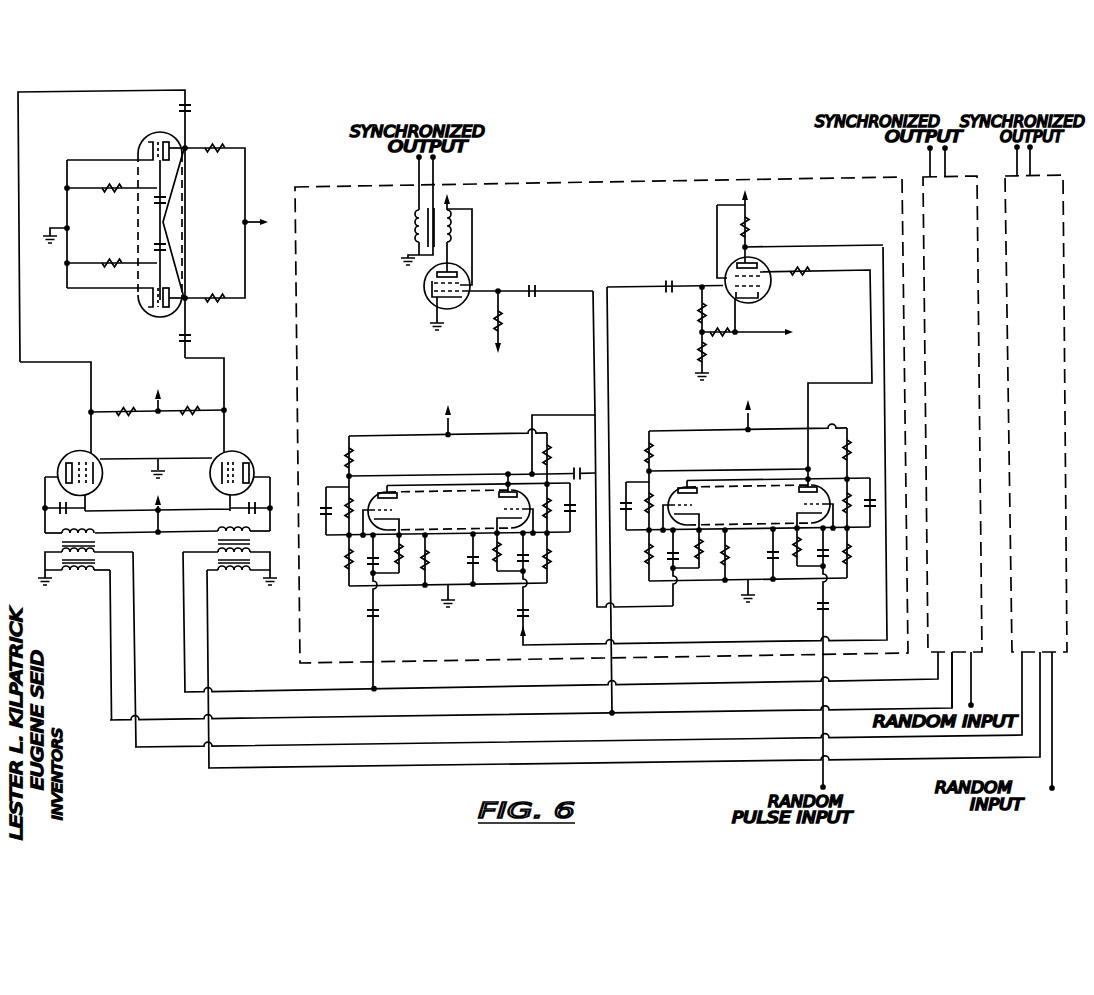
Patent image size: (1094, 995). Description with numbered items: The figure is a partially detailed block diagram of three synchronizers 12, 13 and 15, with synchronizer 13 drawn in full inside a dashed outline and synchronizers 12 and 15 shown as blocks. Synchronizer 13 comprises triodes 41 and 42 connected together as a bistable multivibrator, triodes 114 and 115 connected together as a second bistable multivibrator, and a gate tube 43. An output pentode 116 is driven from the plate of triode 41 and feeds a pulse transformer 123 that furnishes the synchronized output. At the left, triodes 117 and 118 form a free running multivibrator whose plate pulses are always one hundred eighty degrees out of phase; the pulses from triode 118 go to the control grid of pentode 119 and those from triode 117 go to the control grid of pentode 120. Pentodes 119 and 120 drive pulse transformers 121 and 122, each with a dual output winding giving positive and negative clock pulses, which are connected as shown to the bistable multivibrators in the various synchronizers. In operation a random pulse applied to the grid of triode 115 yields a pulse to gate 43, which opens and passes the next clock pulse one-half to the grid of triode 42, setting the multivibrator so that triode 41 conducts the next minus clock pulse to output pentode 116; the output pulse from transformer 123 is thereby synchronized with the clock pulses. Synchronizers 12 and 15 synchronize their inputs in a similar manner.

The synchronizer 12 is at (957, 350).
The synchronizer 13 is at (796, 192).
The synchronizer 15 is at (1042, 351).
The triode 41 is at (378, 494).
The triode 42 is at (512, 491).
The gate tube 43 is at (765, 286).
The triode 114 is at (675, 490).
The triode 115 is at (800, 487).
The output pentode 116 is at (425, 297).
The triode 117 is at (151, 134).
The triode 118 is at (143, 301).
The pentode 119 is at (243, 452).
The pentode 120 is at (72, 454).
The pulse transformer 121 is at (233, 572).
The pulse transformer 122 is at (97, 533).
The pulse transformer 123 is at (416, 226).